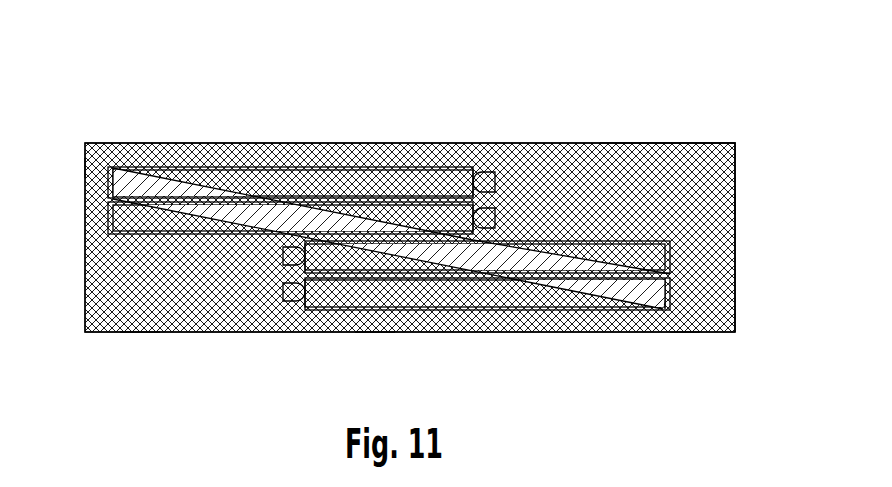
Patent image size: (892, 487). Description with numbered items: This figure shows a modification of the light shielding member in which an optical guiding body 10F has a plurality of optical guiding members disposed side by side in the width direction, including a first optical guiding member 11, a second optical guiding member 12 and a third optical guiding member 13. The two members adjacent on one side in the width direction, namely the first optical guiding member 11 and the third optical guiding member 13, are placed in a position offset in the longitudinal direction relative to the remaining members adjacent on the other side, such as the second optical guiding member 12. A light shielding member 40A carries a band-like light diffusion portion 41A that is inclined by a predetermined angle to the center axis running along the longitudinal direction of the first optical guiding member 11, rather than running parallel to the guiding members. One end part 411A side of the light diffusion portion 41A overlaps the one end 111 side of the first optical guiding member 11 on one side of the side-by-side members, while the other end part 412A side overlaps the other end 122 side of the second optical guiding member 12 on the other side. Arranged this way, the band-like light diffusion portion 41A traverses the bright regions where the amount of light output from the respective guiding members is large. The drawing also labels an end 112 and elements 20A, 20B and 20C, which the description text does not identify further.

The optical guiding body 10F is at (391, 105).
The first optical guiding member 11 is at (200, 143).
The second optical guiding member 12 is at (423, 333).
The third optical guiding member 13 is at (140, 333).
The one end 111 is at (84, 168).
The second end of base 112 is at (696, 205).
The other end 122 is at (686, 333).
The light shielding member 40A is at (653, 143).
The first piezoelectric element 20A is at (529, 143).
The second piezoelectric element 20B is at (277, 333).
The electrode terminals 20C is at (495, 181).
The light diffusion portion 41A is at (323, 143).
The one end part 411A is at (95, 143).
The other end part 412A is at (658, 333).